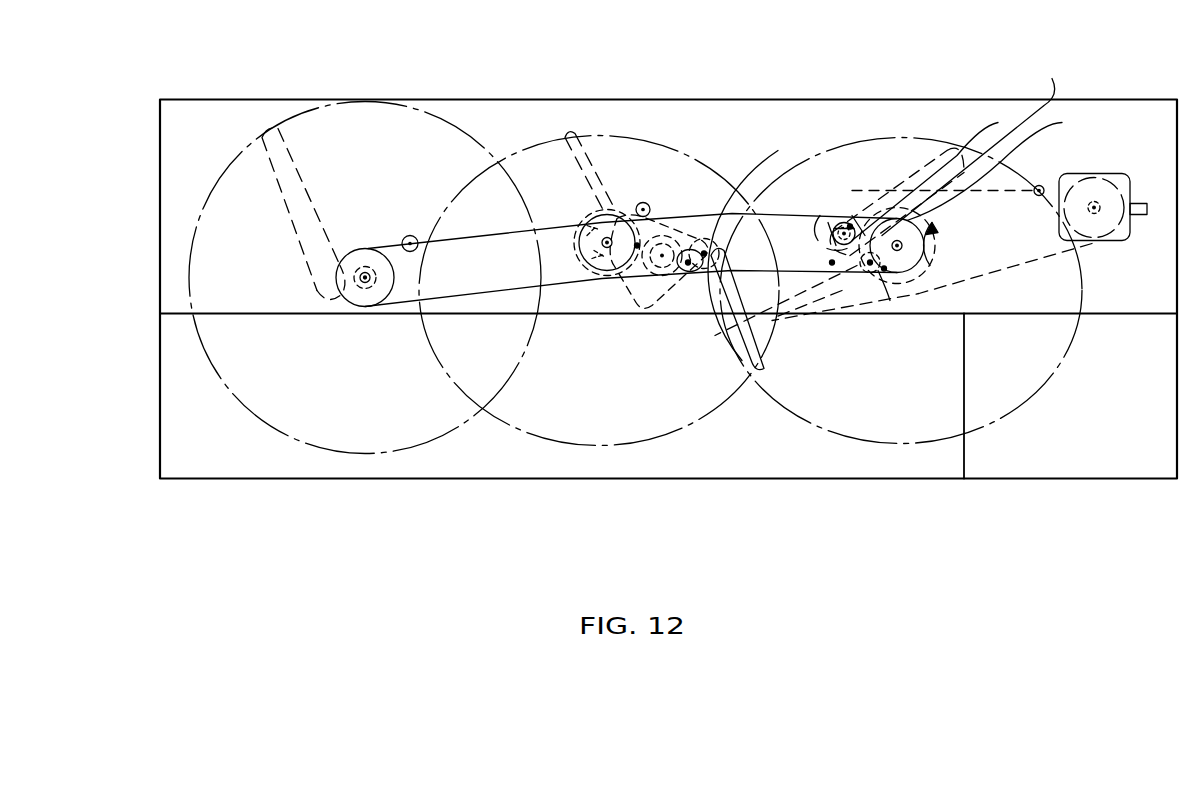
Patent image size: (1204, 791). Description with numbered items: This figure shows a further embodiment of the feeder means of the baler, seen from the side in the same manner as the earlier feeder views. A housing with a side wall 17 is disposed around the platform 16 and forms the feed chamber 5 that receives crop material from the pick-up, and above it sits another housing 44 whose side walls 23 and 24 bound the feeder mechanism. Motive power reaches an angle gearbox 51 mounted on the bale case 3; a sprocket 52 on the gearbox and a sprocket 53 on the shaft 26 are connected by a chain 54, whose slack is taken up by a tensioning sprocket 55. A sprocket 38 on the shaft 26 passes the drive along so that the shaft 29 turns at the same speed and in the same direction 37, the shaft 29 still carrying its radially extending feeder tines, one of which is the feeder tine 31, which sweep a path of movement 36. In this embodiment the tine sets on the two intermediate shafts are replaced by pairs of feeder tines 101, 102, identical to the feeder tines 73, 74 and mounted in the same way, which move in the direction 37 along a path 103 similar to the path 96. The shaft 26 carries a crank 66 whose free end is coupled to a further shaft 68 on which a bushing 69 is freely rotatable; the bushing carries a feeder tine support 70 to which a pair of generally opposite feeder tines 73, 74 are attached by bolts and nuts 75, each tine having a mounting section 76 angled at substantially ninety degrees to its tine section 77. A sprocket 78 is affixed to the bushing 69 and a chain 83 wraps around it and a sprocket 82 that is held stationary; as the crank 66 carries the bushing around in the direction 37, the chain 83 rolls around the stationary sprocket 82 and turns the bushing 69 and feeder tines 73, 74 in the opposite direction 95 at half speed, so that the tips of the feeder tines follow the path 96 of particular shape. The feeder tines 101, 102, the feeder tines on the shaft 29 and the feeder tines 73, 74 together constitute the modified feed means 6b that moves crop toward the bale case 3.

The bale case 3 is at (1110, 480).
The feed chamber 5 is at (565, 485).
The modified feed means 6b is at (428, 420).
The platform 16 is at (803, 480).
The side wall 17 is at (158, 458).
The side wall 23 is at (158, 117).
The side wall 24 is at (1175, 106).
The shaft 26 is at (915, 275).
The shaft 29 is at (367, 286).
The feeder tine 31 is at (282, 172).
The path of movement 36 is at (262, 422).
The direction of rotation 37 is at (942, 246).
The sprocket 38 is at (968, 148).
The housing 44 is at (318, 78).
The angle gearbox 51 is at (1112, 173).
The sprocket 52 is at (1118, 269).
The sprocket 53 is at (936, 232).
The chain 54 is at (1012, 272).
The tensioning sprocket 55 is at (1040, 185).
The crank 66 is at (877, 267).
The shaft 68 is at (830, 236).
The bushing 69 is at (830, 225).
The feeder tine support 70 is at (844, 220).
The feeder tine 73 is at (768, 320).
The feeder tine 74 is at (915, 165).
The bolts and nuts 75 is at (850, 224).
The mounting section 76 is at (828, 224).
The tine section 77 is at (893, 160).
The sprocket 78 is at (820, 238).
The sprocket 82 is at (970, 164).
The chain 83 is at (938, 174).
The opposite direction 95 is at (885, 272).
The path 96 is at (1060, 366).
The feeder tine 101 is at (563, 157).
The feeder tine 102 is at (735, 345).
The path 103 is at (540, 440).